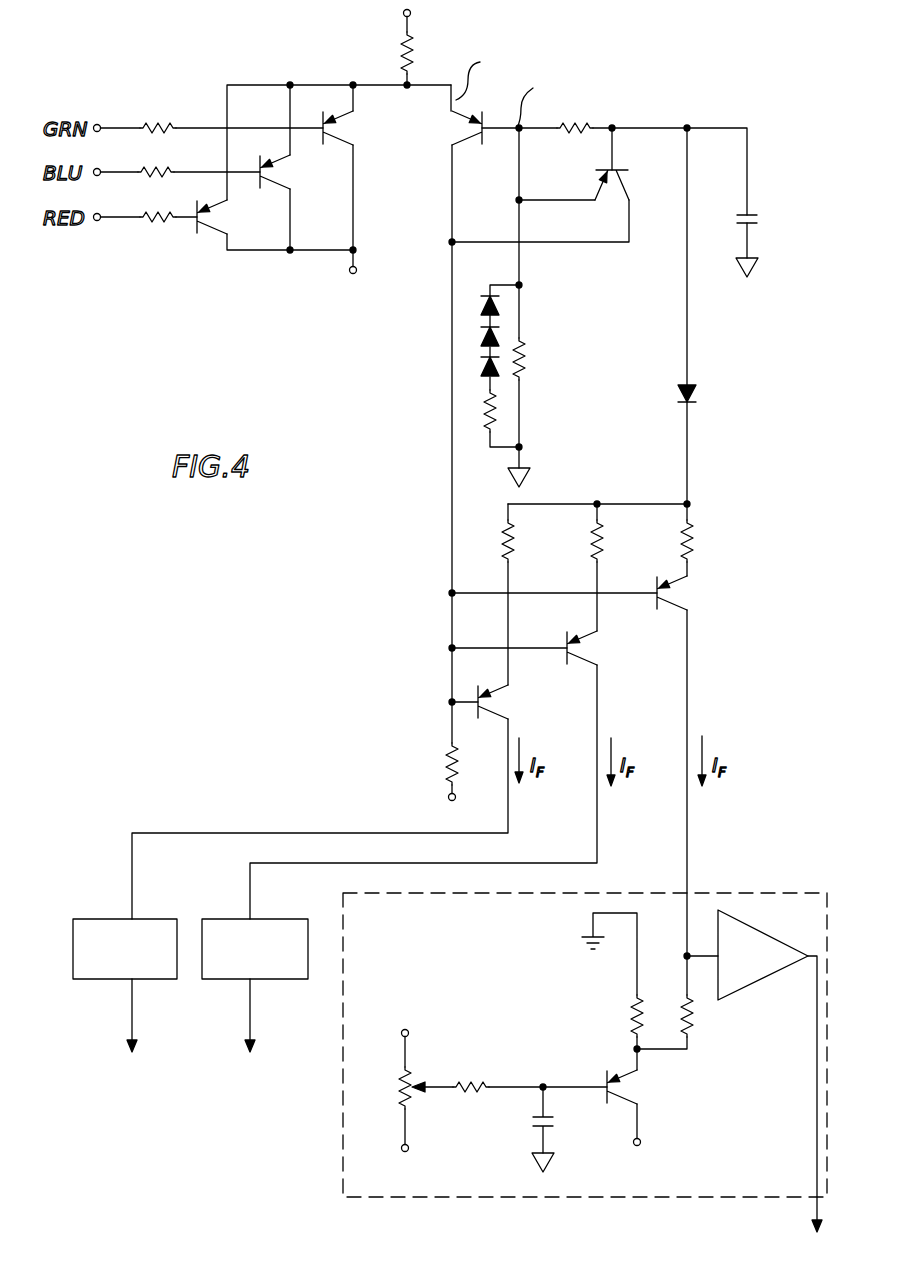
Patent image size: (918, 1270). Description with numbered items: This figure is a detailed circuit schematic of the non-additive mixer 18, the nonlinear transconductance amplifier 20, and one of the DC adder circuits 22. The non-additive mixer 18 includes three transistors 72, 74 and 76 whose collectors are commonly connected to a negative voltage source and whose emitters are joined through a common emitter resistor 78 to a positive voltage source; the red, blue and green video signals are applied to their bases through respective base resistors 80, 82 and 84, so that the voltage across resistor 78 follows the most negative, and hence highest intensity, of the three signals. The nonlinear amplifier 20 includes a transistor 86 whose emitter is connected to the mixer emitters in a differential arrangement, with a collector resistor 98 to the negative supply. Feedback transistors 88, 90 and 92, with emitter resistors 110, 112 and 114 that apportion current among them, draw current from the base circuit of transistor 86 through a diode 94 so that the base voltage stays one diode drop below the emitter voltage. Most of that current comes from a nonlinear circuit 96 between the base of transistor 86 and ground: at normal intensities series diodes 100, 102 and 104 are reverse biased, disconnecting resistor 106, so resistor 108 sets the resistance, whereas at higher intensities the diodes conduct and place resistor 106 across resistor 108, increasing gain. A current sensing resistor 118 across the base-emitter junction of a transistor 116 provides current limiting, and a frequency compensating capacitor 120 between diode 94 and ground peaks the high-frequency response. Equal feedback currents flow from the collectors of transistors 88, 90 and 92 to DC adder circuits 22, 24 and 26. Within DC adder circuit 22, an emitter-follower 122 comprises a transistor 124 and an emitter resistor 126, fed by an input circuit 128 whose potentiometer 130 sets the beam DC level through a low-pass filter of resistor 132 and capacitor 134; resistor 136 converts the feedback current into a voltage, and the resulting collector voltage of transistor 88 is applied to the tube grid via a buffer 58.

The non-additive mixer 18 is at (226, 272).
The nonlinear transconductance amplifier 20 is at (396, 359).
The green DC adder circuit 22 is at (502, 927).
The red DC adder circuit 24 is at (279, 928).
The blue DC adder circuit 26 is at (157, 930).
The buffer 58 is at (758, 970).
The transistor 72 is at (222, 216).
The transistor 74 is at (296, 172).
The transistor 76 is at (352, 128).
The common emitter resistor 78 is at (420, 42).
The base resistor 80 is at (145, 222).
The base resistor 82 is at (170, 178).
The base resistor 84 is at (160, 135).
The transistor 86 is at (468, 120).
The transistor 88 is at (692, 594).
The transistor 90 is at (600, 652).
The transistor 92 is at (510, 706).
The diode 94 is at (700, 382).
The nonlinear circuit 96 is at (499, 384).
The collector resistor 98 is at (444, 768).
The diode 100 is at (510, 308).
The diode 102 is at (505, 337).
The diode 104 is at (481, 360).
The resistor 106 is at (485, 408).
The resistor 108 is at (528, 365).
The emitter resistor 110 is at (695, 537).
The emitter resistor 112 is at (605, 537).
The emitter resistor 114 is at (516, 537).
The current limiting transistor 116 is at (610, 204).
The current sensing resistor 118 is at (576, 126).
The frequency compensating capacitor 120 is at (758, 218).
The emitter-follower 122 is at (604, 1058).
The transistor 124 is at (632, 1092).
The emitter resistor 126 is at (630, 1009).
The input circuit 128 is at (462, 1052).
The potentiometer 130 is at (412, 1096).
The resistor 132 is at (472, 1082).
The capacitor 134 is at (532, 1116).
The resistor 136 is at (694, 1010).